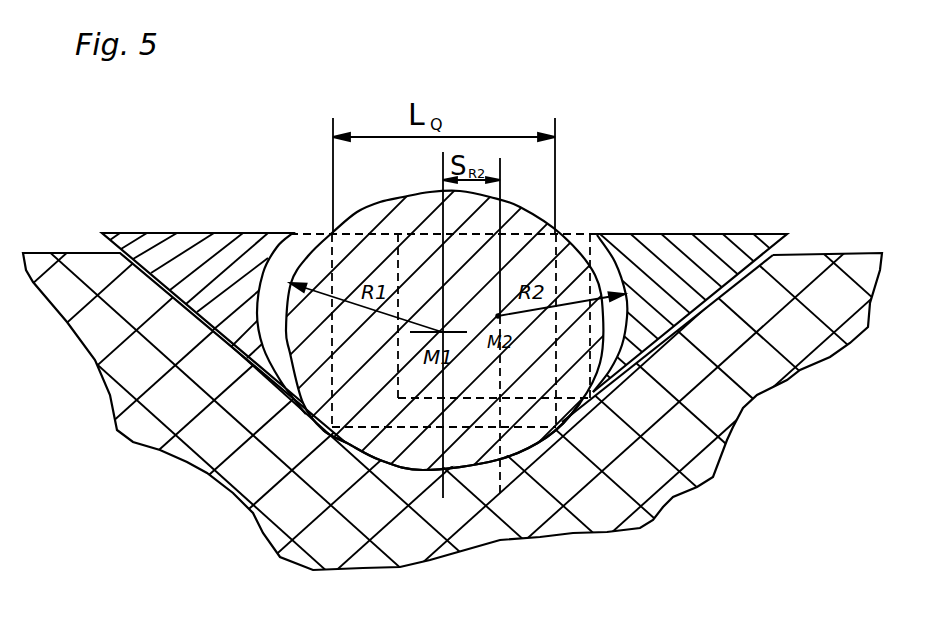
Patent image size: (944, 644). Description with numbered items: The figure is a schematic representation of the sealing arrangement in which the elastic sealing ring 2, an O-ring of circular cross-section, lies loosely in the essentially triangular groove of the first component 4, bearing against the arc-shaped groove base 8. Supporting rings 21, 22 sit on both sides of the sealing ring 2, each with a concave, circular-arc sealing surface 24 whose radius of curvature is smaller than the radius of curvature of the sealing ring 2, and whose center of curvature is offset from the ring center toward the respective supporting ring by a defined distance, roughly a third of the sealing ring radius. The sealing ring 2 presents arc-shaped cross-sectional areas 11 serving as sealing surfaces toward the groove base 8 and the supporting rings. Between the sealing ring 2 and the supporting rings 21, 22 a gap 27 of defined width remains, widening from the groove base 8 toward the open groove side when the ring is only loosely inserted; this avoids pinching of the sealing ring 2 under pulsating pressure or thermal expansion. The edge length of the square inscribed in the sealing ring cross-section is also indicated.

The sealing ring 2 is at (480, 450).
The first component 4 is at (722, 413).
The groove base 8 is at (415, 477).
The arc-shaped cross-sectional areas 11 is at (280, 463).
The supporting ring 21 is at (718, 255).
The supporting ring 22 is at (213, 247).
The sealing surface 24 is at (660, 345).
The gap 27 is at (607, 277).